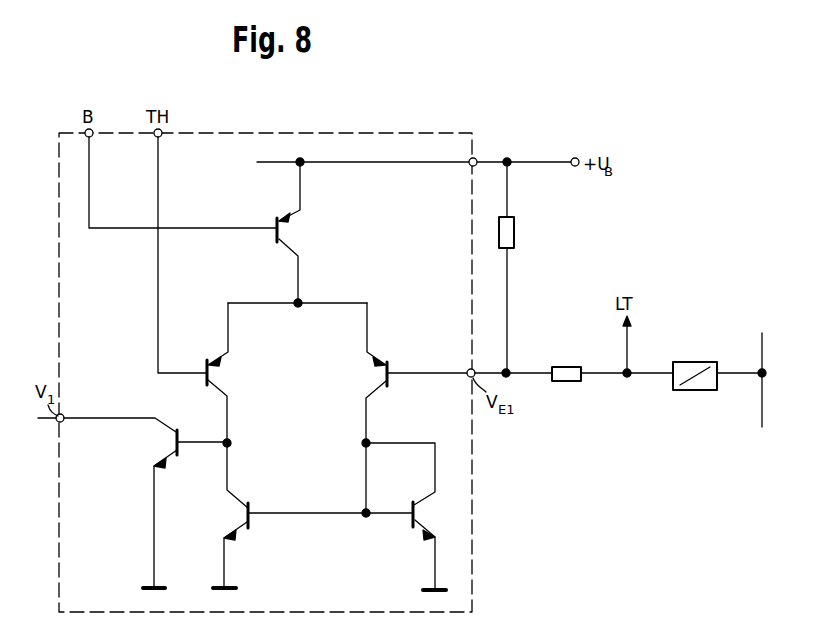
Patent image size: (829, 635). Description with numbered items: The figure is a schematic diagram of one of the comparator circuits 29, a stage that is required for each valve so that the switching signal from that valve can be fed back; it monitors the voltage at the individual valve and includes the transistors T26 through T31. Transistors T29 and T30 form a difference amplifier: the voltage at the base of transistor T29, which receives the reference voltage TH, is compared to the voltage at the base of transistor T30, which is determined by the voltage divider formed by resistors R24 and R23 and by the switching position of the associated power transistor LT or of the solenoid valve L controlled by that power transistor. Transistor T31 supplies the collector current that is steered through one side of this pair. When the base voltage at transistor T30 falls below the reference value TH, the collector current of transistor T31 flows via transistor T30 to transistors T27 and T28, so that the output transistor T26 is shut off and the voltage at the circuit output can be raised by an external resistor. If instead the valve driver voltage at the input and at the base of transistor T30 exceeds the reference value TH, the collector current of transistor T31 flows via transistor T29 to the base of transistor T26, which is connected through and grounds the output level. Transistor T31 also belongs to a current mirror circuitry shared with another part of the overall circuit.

The comparator circuit 29 is at (392, 138).
The output transistor T26 is at (182, 448).
The transistor T27 is at (252, 522).
The transistor T28 is at (407, 516).
The transistor T29 is at (203, 367).
The transistor T30 is at (392, 362).
The transistor T31 is at (272, 224).
The voltage divider resistor R23 is at (568, 381).
The voltage divider resistor R24 is at (514, 232).
The solenoid valve L is at (700, 390).